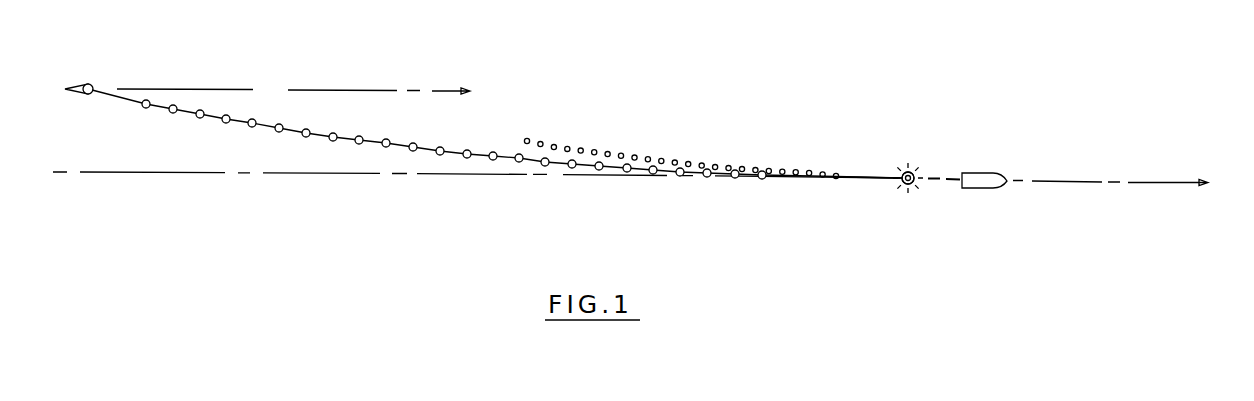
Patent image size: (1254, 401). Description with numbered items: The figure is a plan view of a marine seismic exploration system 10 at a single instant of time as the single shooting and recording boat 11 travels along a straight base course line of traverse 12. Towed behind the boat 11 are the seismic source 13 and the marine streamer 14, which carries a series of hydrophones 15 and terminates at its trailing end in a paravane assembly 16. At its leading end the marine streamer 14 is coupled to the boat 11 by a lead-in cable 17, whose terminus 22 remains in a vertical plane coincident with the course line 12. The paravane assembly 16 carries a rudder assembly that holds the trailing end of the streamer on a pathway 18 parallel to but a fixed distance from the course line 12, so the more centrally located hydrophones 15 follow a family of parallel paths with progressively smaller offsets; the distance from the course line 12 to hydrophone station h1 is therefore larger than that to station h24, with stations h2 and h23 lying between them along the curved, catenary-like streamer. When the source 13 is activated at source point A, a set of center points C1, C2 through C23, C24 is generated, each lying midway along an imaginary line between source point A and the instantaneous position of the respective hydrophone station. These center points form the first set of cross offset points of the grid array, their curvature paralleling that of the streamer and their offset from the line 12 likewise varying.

The marine seismic exploration system 10 is at (1005, 127).
The shooting and recording boat 11 is at (993, 189).
The base course line of traverse 12 is at (1170, 182).
The seismic source 13 is at (912, 169).
The marine streamer 14 is at (323, 131).
The hydrophones 15 is at (447, 183).
The paravane assembly 16 is at (89, 84).
The lead-in cable 17 is at (868, 179).
The pathway 18 is at (413, 92).
The terminus of lead-in cable 22 is at (960, 183).
The source point A is at (903, 168).
The hydrophone station h1 is at (143, 107).
The hydrophone station h2 is at (171, 113).
The hydrophone station h23 is at (734, 178).
The hydrophone station h24 is at (774, 215).
The center point C1 is at (526, 138).
The center point C2 is at (542, 141).
The center point C23 is at (822, 172).
The center point C24 is at (836, 173).